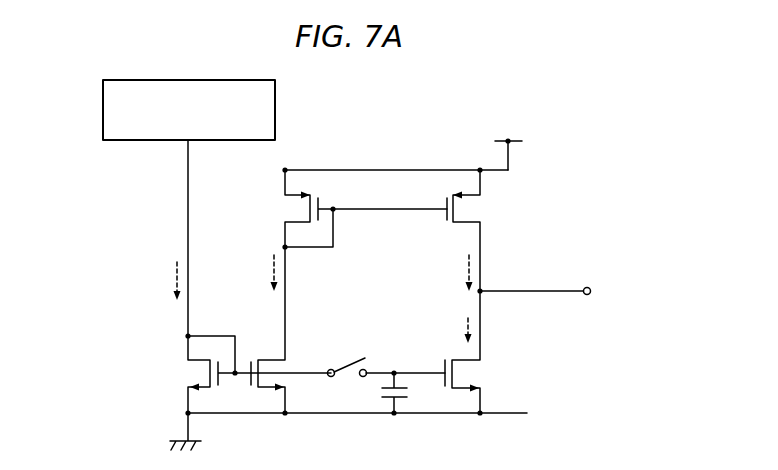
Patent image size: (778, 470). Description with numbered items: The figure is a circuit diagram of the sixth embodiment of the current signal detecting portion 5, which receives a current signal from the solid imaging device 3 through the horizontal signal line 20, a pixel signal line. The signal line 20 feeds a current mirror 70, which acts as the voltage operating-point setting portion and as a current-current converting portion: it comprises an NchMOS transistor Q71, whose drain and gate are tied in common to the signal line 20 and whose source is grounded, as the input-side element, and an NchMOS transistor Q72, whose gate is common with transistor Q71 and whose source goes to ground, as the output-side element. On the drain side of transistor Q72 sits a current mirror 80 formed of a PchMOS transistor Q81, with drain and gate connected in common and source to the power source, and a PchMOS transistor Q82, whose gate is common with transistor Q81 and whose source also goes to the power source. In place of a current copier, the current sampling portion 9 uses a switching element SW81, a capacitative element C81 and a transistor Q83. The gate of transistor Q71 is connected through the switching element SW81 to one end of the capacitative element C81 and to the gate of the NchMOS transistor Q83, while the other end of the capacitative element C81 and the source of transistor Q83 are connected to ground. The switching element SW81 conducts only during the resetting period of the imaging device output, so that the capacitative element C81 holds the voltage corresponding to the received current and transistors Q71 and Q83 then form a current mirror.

The solid imaging device 3 is at (102, 112).
The current signal detecting portion 5 is at (374, 270).
The current sampling portion 9 is at (417, 294).
The horizontal signal line 20 is at (187, 213).
The current mirror 70 is at (207, 356).
The current mirror 80 is at (383, 212).
The NchMOS transistor Q71 is at (192, 372).
The NchMOS transistor Q72 is at (272, 353).
The PchMOS transistor Q81 is at (288, 211).
The PchMOS transistor Q82 is at (480, 212).
The NchMOS transistor Q83 is at (480, 375).
The switching element SW81 is at (348, 360).
The capacitative element C81 is at (377, 393).